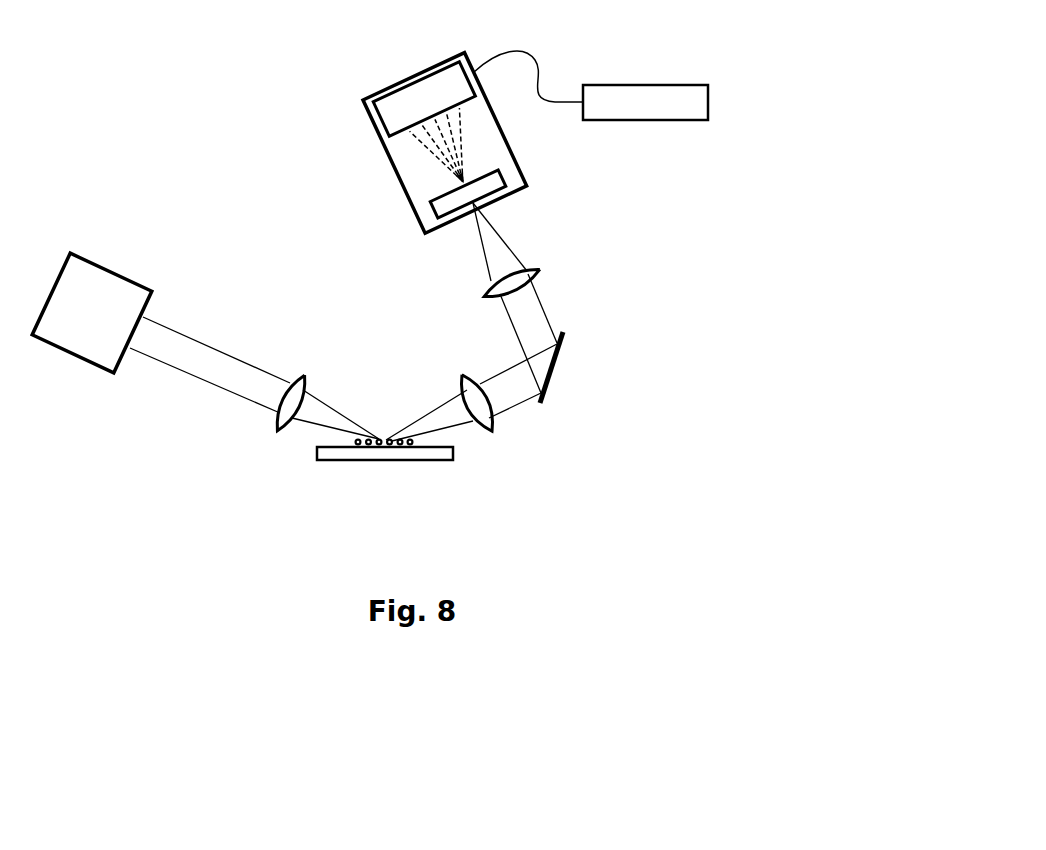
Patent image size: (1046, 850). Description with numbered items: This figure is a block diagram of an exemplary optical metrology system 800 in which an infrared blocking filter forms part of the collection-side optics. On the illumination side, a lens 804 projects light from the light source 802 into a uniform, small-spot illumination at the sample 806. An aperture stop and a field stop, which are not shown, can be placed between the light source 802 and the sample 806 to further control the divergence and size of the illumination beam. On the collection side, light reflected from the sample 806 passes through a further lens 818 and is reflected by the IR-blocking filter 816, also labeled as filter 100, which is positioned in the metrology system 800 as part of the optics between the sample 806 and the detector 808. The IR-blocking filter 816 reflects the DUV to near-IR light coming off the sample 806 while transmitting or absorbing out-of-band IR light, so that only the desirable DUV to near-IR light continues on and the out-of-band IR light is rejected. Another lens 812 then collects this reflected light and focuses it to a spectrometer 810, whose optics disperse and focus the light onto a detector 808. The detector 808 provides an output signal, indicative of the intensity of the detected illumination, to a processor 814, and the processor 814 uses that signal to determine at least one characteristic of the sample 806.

The metrology system 800 is at (63, 52).
The light source 802 is at (155, 297).
The lens 804 is at (276, 436).
The sample 806 is at (382, 460).
The detector 808 is at (432, 70).
The spectrometer 810 is at (381, 121).
The lens 812 is at (541, 276).
The processor 814 is at (625, 85).
The IR-blocking filter 816 is at (650, 374).
The lens 818 is at (462, 375).
The IR filter 100 is at (560, 367).